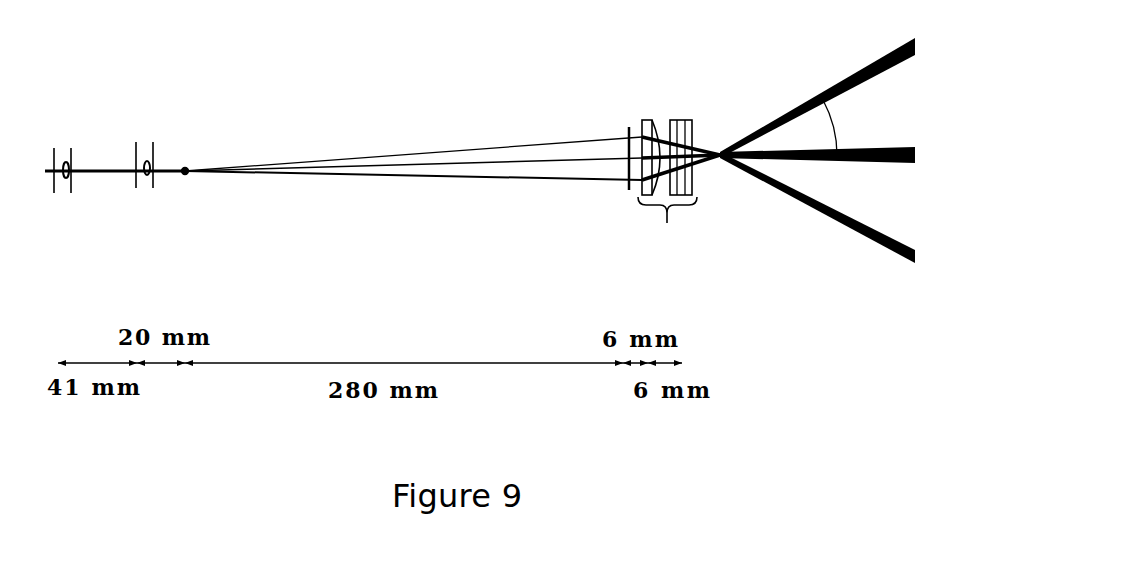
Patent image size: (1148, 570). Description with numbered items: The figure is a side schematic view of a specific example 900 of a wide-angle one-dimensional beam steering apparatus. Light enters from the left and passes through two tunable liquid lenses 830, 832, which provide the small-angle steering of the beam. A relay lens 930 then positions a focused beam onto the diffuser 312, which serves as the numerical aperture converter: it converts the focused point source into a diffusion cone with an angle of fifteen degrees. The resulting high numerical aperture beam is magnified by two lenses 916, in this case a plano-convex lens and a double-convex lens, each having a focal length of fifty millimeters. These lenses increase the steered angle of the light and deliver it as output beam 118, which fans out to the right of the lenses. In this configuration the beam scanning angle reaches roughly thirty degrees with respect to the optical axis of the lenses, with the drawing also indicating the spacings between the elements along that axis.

The specific example of wide-angle 1D beam steering apparatus 900 is at (381, 77).
The tunable liquid lens 830 is at (64, 156).
The tunable liquid lens 832 is at (144, 182).
The relay lens 930 is at (187, 156).
The diffuser plate 312 is at (611, 146).
The lenses 916 is at (686, 107).
The output beam 118 is at (817, 150).